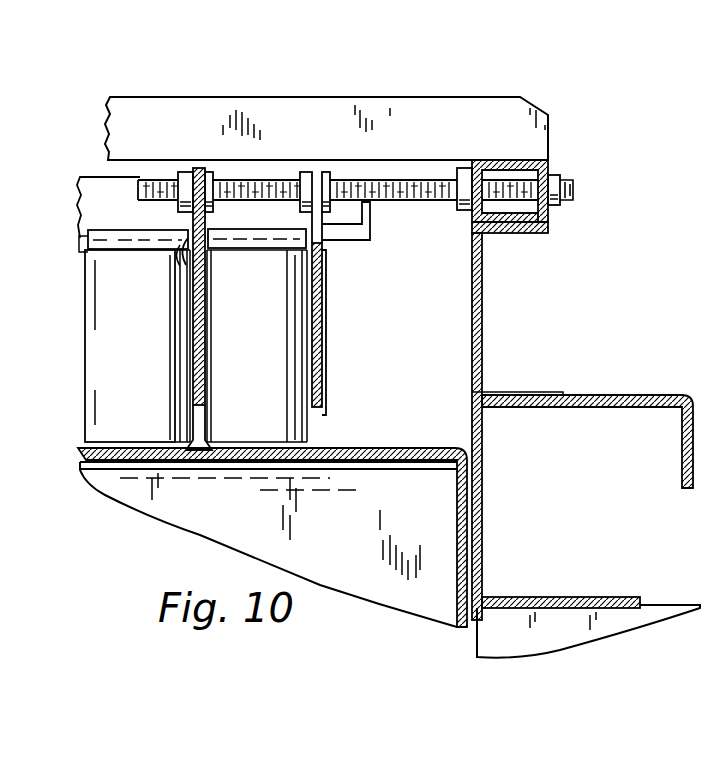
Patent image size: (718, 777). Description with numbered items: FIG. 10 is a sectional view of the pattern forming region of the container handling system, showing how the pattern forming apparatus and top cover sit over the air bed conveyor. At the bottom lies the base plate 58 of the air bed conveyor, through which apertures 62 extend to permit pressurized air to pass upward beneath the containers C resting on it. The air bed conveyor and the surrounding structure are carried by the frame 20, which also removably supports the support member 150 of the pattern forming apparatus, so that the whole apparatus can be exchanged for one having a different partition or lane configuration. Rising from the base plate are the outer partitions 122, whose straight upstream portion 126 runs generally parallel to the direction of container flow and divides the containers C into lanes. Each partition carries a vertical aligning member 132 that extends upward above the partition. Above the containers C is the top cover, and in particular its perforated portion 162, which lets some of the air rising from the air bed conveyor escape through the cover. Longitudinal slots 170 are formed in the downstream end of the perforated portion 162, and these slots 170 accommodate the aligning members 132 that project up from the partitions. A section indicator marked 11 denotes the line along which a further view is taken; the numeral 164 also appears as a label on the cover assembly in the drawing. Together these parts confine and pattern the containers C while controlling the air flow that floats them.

The top cover plate 164 is at (238, 90).
The perforated portion 162 is at (113, 233).
The aligning member 132 is at (192, 214).
The longitudinal slot 170 is at (207, 279).
The straight upstream portion 126 is at (322, 271).
The outer partition 122 is at (325, 318).
The support member 150 is at (548, 162).
The frame 20 is at (682, 469).
The aperture 62 is at (325, 460).
The base plate 58 is at (245, 462).
The section line for FIG. 11 is at (462, 80).
The container C is at (152, 362).